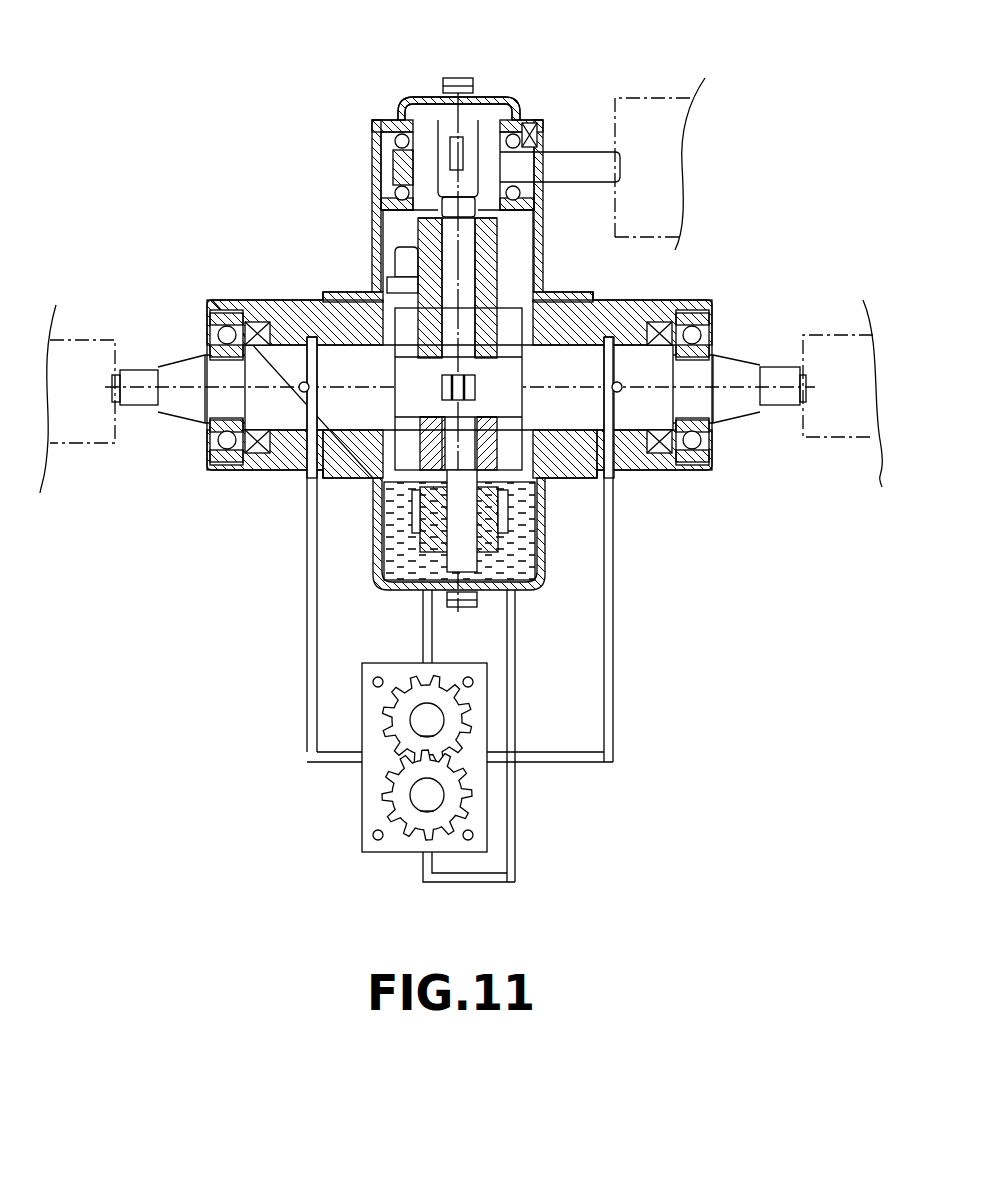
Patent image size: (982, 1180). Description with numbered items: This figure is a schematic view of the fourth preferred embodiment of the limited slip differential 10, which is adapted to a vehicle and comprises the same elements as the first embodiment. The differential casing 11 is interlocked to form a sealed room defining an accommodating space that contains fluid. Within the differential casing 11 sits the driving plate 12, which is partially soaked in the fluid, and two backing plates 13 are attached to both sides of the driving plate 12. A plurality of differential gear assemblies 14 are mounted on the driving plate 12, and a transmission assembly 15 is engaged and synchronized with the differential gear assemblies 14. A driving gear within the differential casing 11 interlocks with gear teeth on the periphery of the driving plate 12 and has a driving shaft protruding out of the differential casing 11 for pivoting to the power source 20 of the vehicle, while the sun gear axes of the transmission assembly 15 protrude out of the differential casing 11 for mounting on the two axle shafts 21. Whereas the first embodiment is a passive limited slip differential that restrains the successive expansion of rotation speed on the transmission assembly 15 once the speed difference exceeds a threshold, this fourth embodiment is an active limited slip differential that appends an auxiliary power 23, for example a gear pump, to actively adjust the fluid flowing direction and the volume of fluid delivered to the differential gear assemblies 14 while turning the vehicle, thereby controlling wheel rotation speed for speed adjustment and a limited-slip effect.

The limited slip differential 10 is at (160, 185).
The differential casing 11 is at (373, 138).
The driving plate 12 is at (463, 232).
The backing plate 13 is at (490, 248).
The differential gear assembly 14 is at (462, 300).
The transmission assembly 15 is at (387, 270).
The power source 20 is at (645, 118).
The axle shaft 21 is at (829, 360).
The auxiliary power 23 is at (492, 823).